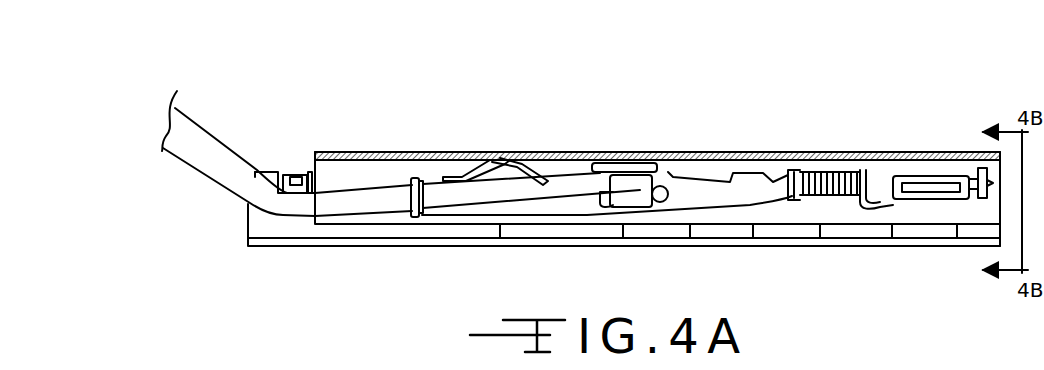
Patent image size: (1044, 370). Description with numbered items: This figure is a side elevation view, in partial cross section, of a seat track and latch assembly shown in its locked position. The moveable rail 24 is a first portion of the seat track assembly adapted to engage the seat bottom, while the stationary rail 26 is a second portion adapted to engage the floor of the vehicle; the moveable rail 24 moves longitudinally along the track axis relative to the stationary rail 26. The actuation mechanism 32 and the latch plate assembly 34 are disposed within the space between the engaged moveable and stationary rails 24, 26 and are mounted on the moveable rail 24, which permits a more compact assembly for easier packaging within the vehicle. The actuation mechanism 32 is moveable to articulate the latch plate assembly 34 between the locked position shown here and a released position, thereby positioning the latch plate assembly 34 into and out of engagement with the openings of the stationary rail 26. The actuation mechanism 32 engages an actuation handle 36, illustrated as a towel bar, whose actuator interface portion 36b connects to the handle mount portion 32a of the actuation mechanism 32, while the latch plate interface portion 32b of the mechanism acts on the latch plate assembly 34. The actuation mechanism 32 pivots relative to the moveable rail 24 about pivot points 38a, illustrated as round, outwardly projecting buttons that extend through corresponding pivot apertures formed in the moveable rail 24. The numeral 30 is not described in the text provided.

The moveable rail 24 is at (363, 152).
The stationary rail 26 is at (331, 247).
The housing 30 is at (773, 235).
The actuation mechanism 32 is at (687, 166).
The handle mount portion 32a is at (547, 205).
The latch plate interface portion 32b is at (903, 171).
The latch plate assembly 34 is at (920, 169).
The actuation handle 36 is at (203, 150).
The actuator interface portion 36b is at (565, 183).
The pivot points 38a is at (660, 195).